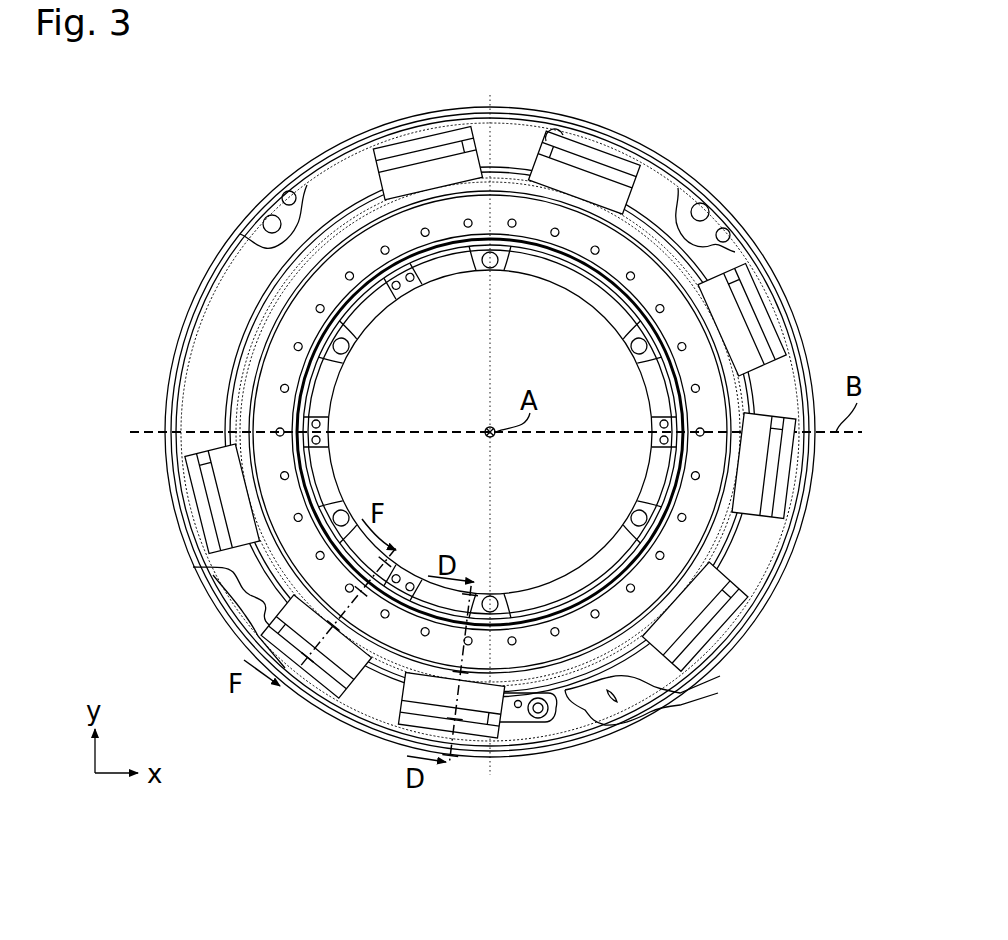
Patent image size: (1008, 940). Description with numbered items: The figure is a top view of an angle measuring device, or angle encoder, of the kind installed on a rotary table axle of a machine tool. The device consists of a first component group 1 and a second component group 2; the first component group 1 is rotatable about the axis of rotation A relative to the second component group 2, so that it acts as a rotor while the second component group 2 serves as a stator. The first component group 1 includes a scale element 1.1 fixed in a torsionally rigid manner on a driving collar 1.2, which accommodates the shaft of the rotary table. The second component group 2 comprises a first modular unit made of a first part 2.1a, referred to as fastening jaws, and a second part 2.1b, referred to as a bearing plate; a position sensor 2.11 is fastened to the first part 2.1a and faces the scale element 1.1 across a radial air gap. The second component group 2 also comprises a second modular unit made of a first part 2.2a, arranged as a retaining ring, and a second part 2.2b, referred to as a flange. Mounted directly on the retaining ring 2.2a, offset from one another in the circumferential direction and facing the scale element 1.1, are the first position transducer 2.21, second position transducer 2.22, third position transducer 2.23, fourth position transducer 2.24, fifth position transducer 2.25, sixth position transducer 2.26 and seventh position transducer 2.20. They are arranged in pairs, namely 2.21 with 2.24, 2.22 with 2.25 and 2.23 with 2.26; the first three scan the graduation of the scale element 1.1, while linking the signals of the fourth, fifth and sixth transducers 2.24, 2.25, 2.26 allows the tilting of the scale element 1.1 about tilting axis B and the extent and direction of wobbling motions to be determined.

The first component group 1 is at (582, 559).
The scale element 1.1 is at (717, 527).
The driving collar 1.2 is at (333, 432).
The second component group 2 is at (158, 424).
The first part 2.1a is at (520, 712).
The second part 2.1b is at (562, 697).
The first part 2.2a is at (222, 313).
The second part 2.2b is at (278, 207).
The position sensor 2.11 is at (480, 732).
The seventh position transducer 2.20 is at (712, 625).
The first position transducer 2.21 is at (325, 692).
The second position transducer 2.22 is at (430, 150).
The third position transducer 2.23 is at (752, 300).
The fourth position transducer 2.24 is at (215, 530).
The fifth position transducer 2.25 is at (590, 162).
The sixth position transducer 2.26 is at (782, 470).